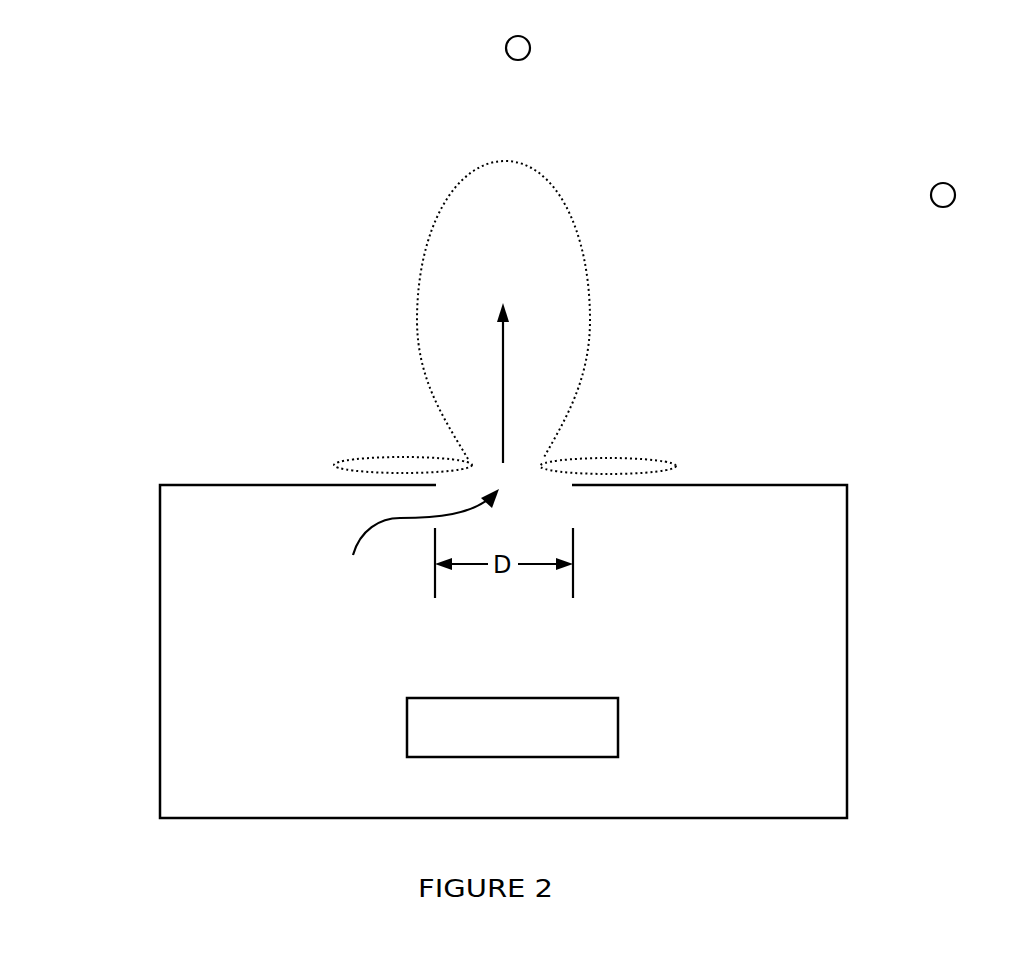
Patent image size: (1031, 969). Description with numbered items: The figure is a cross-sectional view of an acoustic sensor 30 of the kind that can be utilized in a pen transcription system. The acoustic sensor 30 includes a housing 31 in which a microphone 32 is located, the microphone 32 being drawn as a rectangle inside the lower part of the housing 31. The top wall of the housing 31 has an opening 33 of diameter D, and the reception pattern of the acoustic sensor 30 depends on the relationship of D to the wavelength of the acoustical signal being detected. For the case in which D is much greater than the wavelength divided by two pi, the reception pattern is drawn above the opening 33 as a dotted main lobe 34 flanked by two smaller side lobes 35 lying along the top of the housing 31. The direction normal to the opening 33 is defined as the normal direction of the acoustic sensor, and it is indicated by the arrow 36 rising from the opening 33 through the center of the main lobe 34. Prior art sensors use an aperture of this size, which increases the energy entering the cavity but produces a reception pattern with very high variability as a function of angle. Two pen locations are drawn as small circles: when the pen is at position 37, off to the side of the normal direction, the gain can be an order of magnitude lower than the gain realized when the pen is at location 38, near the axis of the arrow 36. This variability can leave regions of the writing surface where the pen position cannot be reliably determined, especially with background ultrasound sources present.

The acoustic sensor 30 is at (214, 358).
The housing 31 is at (847, 522).
The microphone 32 is at (610, 731).
The opening 33 is at (423, 541).
The reception pattern main lobe 34 is at (585, 262).
The side lobes 35 is at (644, 457).
The arrow indicating normal direction 36 is at (503, 413).
The pen position 37 is at (955, 190).
The pen location 38 is at (530, 44).